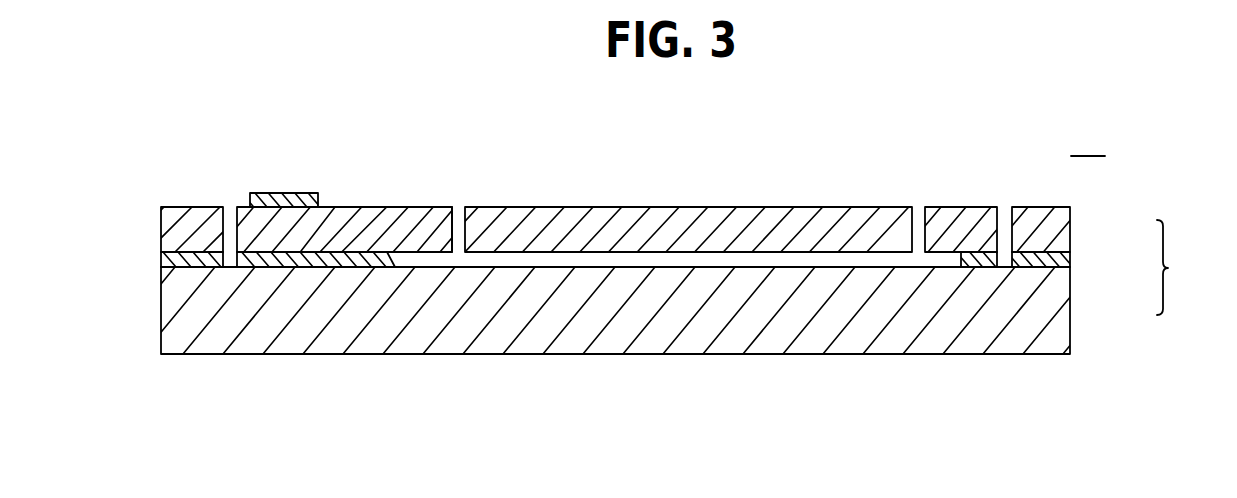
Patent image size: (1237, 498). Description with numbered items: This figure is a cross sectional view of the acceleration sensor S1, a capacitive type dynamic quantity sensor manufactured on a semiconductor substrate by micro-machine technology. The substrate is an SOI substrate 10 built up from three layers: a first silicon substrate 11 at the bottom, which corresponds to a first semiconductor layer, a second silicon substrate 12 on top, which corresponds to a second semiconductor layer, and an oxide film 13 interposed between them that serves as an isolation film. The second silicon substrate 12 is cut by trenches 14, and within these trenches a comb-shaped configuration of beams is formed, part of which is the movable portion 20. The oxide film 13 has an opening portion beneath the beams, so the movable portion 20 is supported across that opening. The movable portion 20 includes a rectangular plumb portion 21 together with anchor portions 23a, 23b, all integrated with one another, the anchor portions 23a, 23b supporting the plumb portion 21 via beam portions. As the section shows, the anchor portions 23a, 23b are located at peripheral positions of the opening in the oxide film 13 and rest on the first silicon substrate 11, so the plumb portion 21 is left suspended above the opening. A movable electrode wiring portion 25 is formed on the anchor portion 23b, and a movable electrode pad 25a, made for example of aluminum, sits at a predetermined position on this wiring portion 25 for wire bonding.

The SOI substrate 10 is at (1183, 267).
The first silicon substrate 11 is at (1058, 293).
The second silicon substrate 12 is at (1063, 237).
The oxide film 13 is at (1060, 262).
The trench 14 is at (1005, 220).
The movable portion 20 is at (729, 206).
The rectangular plumb portion 21 is at (658, 205).
The anchor portion 23a is at (973, 205).
The anchor portion 23b is at (403, 205).
The movable electrode wiring portion 25 is at (337, 205).
The movable electrode pad 25a is at (283, 192).
The acceleration sensor S1 is at (1068, 185).